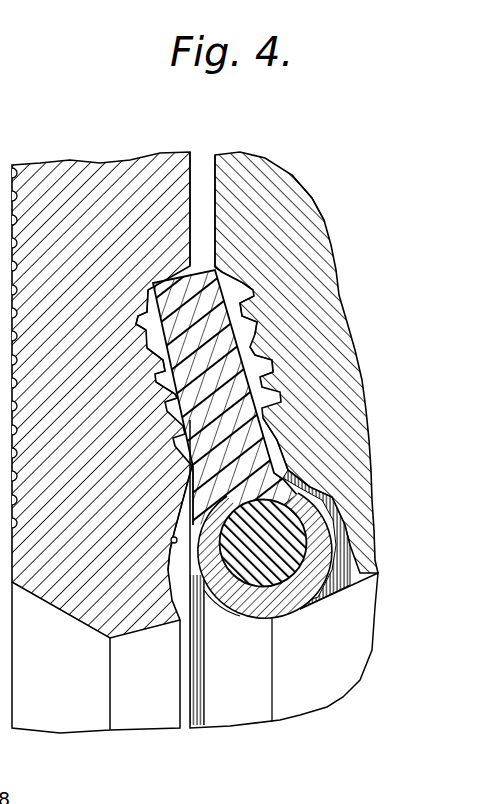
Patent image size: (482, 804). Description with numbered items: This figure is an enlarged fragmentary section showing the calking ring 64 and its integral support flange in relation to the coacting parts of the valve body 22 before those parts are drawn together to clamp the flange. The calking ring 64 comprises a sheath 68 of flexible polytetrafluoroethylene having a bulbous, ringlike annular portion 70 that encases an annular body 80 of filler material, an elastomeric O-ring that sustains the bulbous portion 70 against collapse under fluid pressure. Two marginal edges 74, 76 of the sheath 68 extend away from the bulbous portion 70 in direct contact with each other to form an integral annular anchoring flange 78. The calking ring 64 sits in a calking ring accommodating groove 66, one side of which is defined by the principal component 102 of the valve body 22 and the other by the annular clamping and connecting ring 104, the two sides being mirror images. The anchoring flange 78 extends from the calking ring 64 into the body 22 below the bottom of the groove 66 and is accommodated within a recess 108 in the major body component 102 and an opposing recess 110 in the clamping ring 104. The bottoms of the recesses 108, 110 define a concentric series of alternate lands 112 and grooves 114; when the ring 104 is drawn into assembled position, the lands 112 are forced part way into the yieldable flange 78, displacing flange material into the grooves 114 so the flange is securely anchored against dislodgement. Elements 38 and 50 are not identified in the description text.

The valve body 22 is at (251, 154).
The spring 38 is at (4, 192).
The body member 50 is at (320, 690).
The calking ring 64 is at (216, 614).
The calking ring accommodating groove 66 is at (171, 541).
The sheath 68 is at (288, 624).
The bulbous annular portion 70 is at (250, 621).
The marginal edge 74 is at (197, 462).
The marginal edge 76 is at (246, 416).
The annular anchoring flange 78 is at (202, 264).
The annular body of filler material 80 is at (290, 570).
The principal component of the valve body 102 is at (308, 212).
The annular clamping and connecting ring 104 is at (67, 178).
The recess 108 is at (228, 273).
The recess 110 is at (146, 296).
The lands 112 is at (160, 400).
The grooves 114 is at (148, 354).